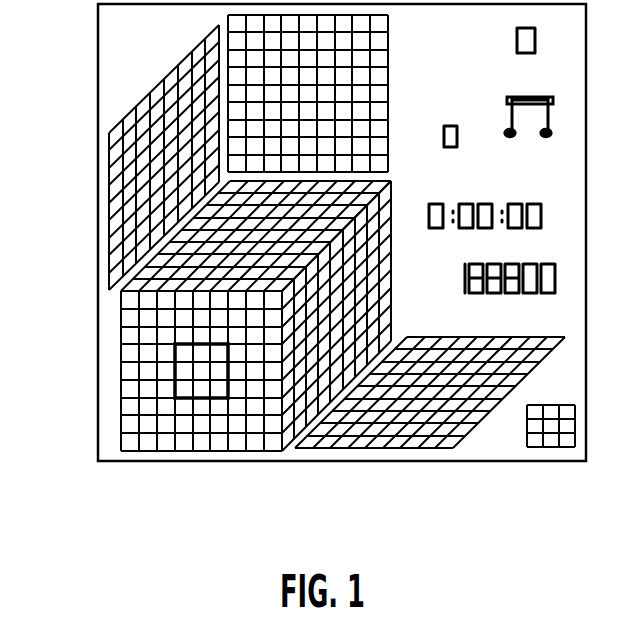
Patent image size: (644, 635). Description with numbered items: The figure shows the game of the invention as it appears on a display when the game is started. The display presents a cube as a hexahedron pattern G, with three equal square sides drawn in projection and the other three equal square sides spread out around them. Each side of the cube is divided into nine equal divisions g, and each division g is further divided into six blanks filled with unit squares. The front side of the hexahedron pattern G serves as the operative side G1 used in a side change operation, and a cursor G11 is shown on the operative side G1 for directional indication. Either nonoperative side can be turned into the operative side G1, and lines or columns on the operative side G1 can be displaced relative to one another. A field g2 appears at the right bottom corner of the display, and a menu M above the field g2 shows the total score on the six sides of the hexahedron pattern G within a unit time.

The hexahedron pattern G is at (110, 308).
The operative side G1 is at (140, 452).
The cursor G11 is at (176, 344).
The division g is at (258, 425).
The field g2 is at (555, 447).
The menu M is at (550, 273).